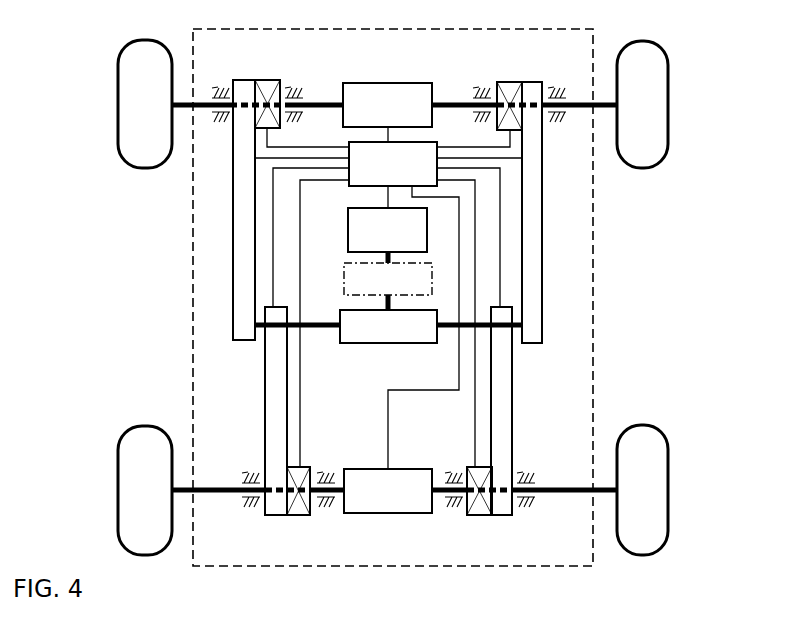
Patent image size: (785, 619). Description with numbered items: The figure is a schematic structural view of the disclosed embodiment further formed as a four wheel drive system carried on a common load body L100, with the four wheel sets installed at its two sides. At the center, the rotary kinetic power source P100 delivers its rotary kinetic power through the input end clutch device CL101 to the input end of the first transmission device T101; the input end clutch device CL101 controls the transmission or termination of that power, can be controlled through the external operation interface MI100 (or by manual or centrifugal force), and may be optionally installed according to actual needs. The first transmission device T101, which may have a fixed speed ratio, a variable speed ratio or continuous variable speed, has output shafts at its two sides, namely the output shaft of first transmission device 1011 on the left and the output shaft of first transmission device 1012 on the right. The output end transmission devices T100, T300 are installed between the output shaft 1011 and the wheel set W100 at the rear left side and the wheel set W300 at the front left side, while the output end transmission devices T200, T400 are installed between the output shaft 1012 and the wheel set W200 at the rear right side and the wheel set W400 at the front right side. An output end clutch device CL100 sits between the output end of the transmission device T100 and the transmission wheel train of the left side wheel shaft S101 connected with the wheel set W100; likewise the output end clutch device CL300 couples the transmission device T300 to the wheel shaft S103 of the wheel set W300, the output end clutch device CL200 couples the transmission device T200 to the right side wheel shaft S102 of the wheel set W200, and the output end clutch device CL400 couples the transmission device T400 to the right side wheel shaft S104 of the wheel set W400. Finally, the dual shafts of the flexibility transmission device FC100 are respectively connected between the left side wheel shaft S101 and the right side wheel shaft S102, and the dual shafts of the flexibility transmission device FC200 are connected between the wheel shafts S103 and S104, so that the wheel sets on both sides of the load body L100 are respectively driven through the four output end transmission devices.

The wheel set W100 is at (133, 452).
The wheel set W200 is at (653, 453).
The wheel set W300 is at (135, 115).
The wheel set W400 is at (655, 127).
The left side wheel shaft S101 is at (228, 493).
The right side wheel shaft S102 is at (575, 495).
The left side wheel shaft S103 is at (206, 102).
The right side wheel shaft S104 is at (575, 102).
The output end transmission device T100 is at (273, 425).
The output end transmission device T200 is at (502, 438).
The output end transmission device T300 is at (233, 187).
The output end transmission device T400 is at (540, 200).
The output end clutch device CL100 is at (302, 465).
The output end clutch device CL200 is at (467, 467).
The output end clutch device CL300 is at (263, 88).
The output end clutch device CL400 is at (505, 88).
The flexibility transmission device FC100 is at (388, 491).
The flexibility transmission device FC200 is at (387, 112).
The external operation interface MI100 is at (404, 305).
The rotary kinetic power source P100 is at (387, 235).
The input end clutch device CL101 is at (388, 286).
The first transmission device T101 is at (388, 326).
The output shaft of first transmission device 1011 is at (315, 328).
The output shaft of first transmission device 1012 is at (450, 330).
The common load body L100 is at (176, 340).